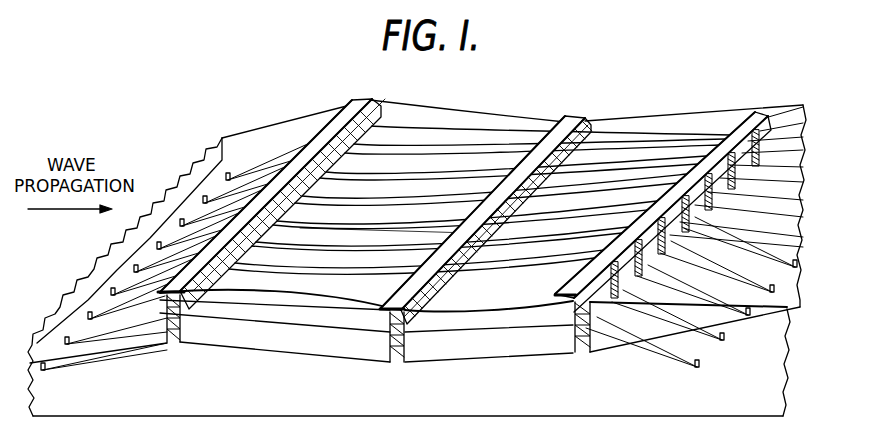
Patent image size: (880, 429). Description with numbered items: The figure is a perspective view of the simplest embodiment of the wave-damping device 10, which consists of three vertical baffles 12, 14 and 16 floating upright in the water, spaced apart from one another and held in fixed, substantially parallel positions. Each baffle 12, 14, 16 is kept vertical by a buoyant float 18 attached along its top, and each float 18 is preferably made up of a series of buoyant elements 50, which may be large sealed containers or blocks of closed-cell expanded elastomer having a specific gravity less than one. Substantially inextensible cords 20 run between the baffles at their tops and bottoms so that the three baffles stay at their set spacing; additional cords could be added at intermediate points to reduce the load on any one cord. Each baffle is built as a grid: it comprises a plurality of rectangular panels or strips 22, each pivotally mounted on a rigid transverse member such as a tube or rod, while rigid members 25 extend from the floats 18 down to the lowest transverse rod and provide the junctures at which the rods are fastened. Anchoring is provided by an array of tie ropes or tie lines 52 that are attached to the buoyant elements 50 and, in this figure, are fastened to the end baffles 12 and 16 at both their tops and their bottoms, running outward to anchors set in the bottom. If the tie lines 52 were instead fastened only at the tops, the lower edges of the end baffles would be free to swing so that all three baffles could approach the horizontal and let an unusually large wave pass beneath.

The wave-damping device 10 is at (657, 104).
The vertical baffle 12 is at (327, 123).
The vertical baffle 14 is at (548, 135).
The vertical baffle 16 is at (716, 132).
The buoyant float 18 is at (351, 101).
The inextensible cord 20 is at (436, 150).
The rectangular panel 22 is at (410, 340).
The rigid member 25 is at (592, 340).
The buoyant element 50 is at (513, 174).
The tie rope 52 is at (122, 333).